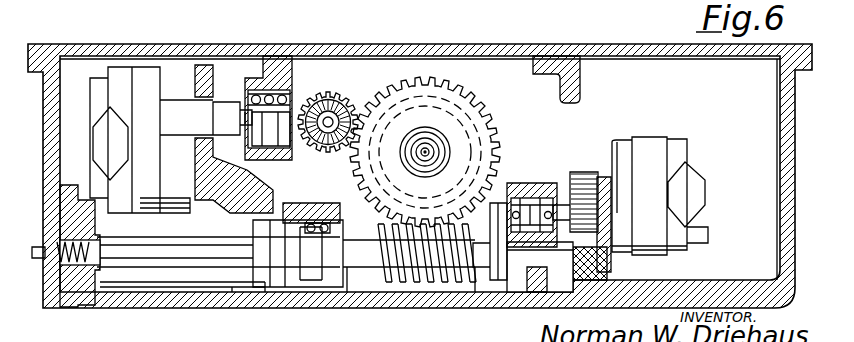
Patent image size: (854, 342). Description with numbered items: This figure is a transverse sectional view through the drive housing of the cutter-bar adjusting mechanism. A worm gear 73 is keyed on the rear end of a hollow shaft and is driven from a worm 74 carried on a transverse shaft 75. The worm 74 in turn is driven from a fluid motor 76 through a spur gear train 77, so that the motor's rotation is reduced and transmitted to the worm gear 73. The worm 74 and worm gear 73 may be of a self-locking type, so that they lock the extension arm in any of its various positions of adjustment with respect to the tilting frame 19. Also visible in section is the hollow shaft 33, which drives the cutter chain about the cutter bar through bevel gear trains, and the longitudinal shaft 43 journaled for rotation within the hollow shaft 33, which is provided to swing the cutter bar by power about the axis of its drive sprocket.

The tilting frame 19 is at (194, 307).
The hollow shaft 33 is at (455, 143).
The longitudinal shaft 43 is at (430, 133).
The worm gear 73 is at (503, 183).
The worm 74 is at (408, 280).
The transverse shaft 75 is at (470, 270).
The fluid motor 76 is at (645, 140).
The spur gear train 77 is at (548, 185).